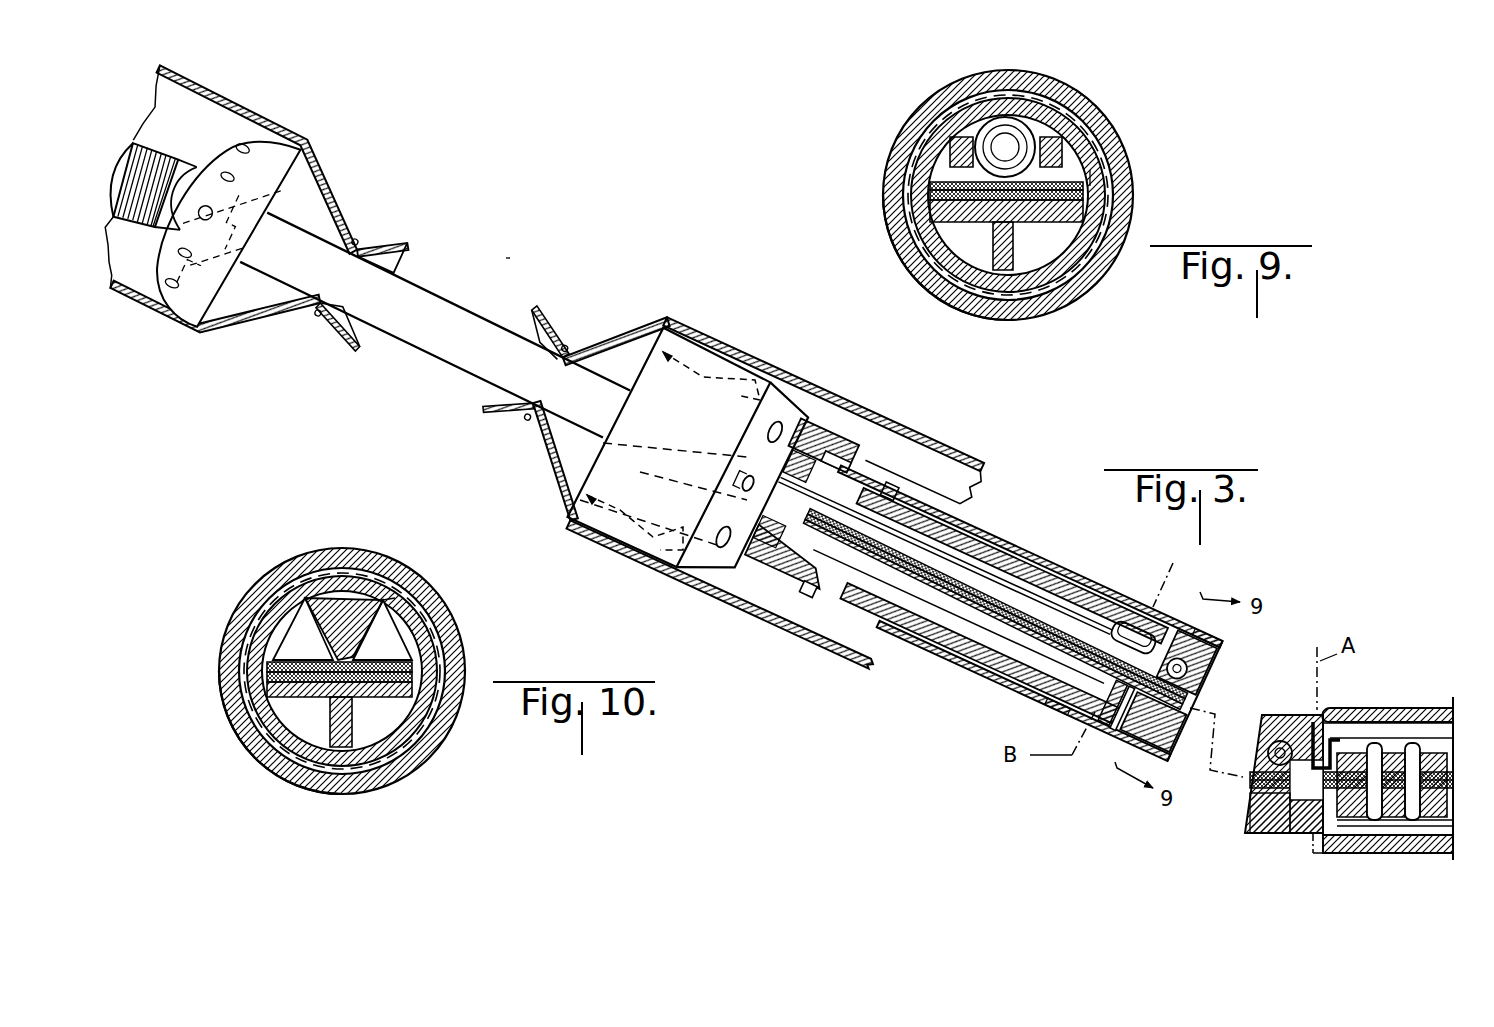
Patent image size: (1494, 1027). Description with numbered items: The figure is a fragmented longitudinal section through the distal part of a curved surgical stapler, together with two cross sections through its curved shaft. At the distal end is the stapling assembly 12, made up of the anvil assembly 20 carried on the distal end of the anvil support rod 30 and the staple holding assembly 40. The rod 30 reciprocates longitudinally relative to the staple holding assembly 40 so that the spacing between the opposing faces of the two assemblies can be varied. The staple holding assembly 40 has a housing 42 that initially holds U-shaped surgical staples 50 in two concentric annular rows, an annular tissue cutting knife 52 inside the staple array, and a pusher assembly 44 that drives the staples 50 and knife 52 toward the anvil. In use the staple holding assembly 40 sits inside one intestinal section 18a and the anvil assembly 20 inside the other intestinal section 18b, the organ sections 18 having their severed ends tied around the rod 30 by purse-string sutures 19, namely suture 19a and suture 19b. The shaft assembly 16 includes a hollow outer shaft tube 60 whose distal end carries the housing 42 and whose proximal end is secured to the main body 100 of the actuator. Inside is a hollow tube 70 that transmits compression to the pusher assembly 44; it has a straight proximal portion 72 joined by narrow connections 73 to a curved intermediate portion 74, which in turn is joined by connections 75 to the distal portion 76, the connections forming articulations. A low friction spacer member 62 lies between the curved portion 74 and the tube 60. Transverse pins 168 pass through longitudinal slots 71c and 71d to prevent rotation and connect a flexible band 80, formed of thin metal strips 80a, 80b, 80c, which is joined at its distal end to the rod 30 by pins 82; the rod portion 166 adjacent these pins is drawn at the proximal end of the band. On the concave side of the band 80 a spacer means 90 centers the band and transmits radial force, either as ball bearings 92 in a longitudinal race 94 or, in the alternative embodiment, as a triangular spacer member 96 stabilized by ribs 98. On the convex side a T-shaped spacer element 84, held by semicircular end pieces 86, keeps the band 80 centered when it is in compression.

In FIG. 3, the stapling assembly 12 is at (505, 258).
In FIG. 3, the shaft assembly 16 is at (1173, 545).
In FIG. 9, the shaft assembly 16 is at (898, 277).
In FIG. 10, the shaft assembly 16 is at (263, 780).
In FIG. 3, the housing 18 is at (964, 540).
In FIG. 3, the intestinal section 18a is at (736, 628).
In FIG. 3, the intestinal section 18b is at (243, 107).
In FIG. 3, the tube stub 19 is at (888, 492).
In FIG. 3, the purse-string suture 19a is at (527, 420).
In FIG. 3, the purse-string suture 19b is at (359, 242).
In FIG. 3, the anvil assembly 20 is at (197, 327).
In FIG. 3, the anvil support rod 30 is at (430, 348).
In FIG. 3, the staple holding assembly 40 is at (650, 552).
In FIG. 3, the housing 42 is at (733, 567).
In FIG. 3, the pusher assembly 44 is at (800, 432).
In FIG. 3, the surgical staples 50 is at (695, 335).
In FIG. 3, the tissue cutting knife 52 is at (670, 451).
In FIG. 3, the outer shaft tube 60 is at (928, 648).
In FIG. 9, the outer shaft tube 60 is at (1057, 93).
In FIG. 10, the outer shaft tube 60 is at (453, 657).
In FIG. 3, the spacer member 62 is at (1253, 645).
In FIG. 9, the spacer member 62 is at (967, 93).
In FIG. 10, the spacer member 62 is at (393, 568).
In FIG. 3, the hollow tube 70 is at (1247, 828).
In FIG. 3, the longitudinal slot 71c is at (1428, 743).
In FIG. 3, the longitudinal slot 71d is at (1428, 827).
In FIG. 3, the proximal portion 72 is at (1337, 820).
In FIG. 3, the connections 73 is at (1313, 853).
In FIG. 3, the intermediate portion 74 is at (1190, 747).
In FIG. 9, the intermediate portion 74 is at (1090, 153).
In FIG. 10, the intermediate portion 74 is at (275, 610).
In FIG. 3, the connections 75 is at (1097, 713).
In FIG. 3, the distal portion 76 is at (1057, 707).
In FIG. 3, the flexible band 80 is at (996, 660).
In FIG. 9, the flexible band 80 is at (933, 196).
In FIG. 10, the flexible band 80 is at (258, 662).
In FIG. 9, the metal strip 80a is at (930, 186).
In FIG. 10, the metal strip 80a is at (270, 663).
In FIG. 9, the metal strip 80b is at (930, 196).
In FIG. 10, the metal strip 80b is at (270, 672).
In FIG. 9, the metal strip 80c is at (930, 208).
In FIG. 10, the metal strip 80c is at (267, 682).
In FIG. 3, the pins 82 is at (824, 460).
In FIG. 3, the spacer element 84 is at (1263, 827).
In FIG. 9, the spacer element 84 is at (1040, 283).
In FIG. 10, the spacer element 84 is at (343, 760).
In FIG. 3, the semicircular end pieces 86 is at (1100, 727).
In FIG. 3, the spacer means 90 is at (1240, 667).
In FIG. 9, the spacer means 90 is at (1047, 177).
In FIG. 10, the spacer means 90 is at (377, 627).
In FIG. 3, the ball bearings 92 is at (1173, 660).
In FIG. 9, the ball bearings 92 is at (1002, 123).
In FIG. 3, the longitudinal race 94 is at (1213, 650).
In FIG. 9, the longitudinal race 94 is at (957, 147).
In FIG. 10, the spacer member 96 is at (313, 633).
In FIG. 10, the ribs 98 is at (300, 620).
In FIG. 3, the main body 100 is at (1357, 713).
In FIG. 3, the end block 166 is at (1443, 753).
In FIG. 3, the transverse pins 168 is at (1413, 820).